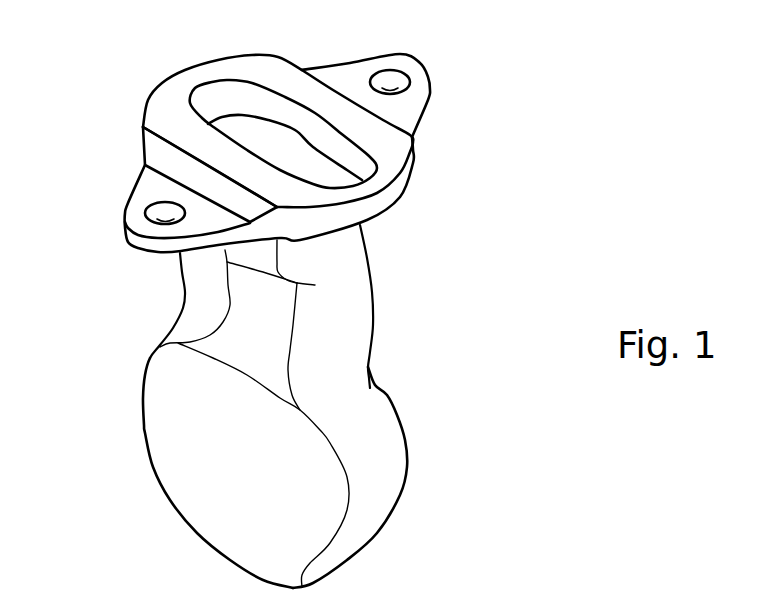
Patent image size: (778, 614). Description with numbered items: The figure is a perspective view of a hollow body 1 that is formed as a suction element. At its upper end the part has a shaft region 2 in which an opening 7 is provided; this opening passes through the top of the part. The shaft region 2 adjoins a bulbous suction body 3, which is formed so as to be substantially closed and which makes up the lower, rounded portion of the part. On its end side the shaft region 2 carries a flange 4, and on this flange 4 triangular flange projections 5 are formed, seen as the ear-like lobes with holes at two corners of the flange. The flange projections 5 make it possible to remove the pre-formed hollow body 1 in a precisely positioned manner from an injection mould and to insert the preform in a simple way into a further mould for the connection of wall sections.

The hollow body 1 is at (114, 486).
The shaft region 2 is at (418, 319).
The bulbous suction body 3 is at (422, 517).
The flange 4 is at (395, 153).
The flange projections 5 is at (415, 97).
The opening 7 is at (233, 130).